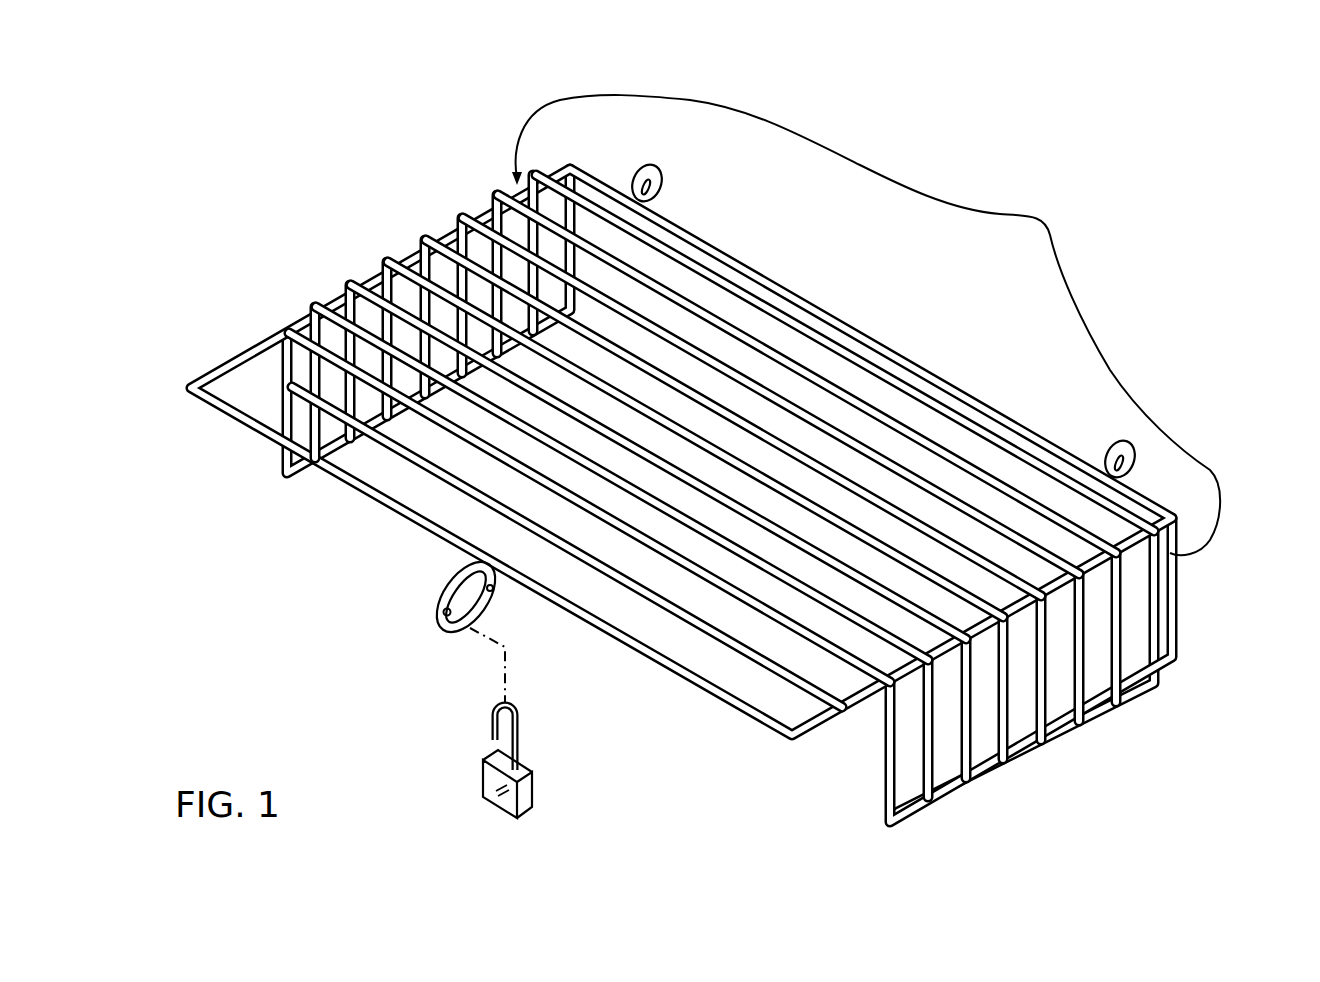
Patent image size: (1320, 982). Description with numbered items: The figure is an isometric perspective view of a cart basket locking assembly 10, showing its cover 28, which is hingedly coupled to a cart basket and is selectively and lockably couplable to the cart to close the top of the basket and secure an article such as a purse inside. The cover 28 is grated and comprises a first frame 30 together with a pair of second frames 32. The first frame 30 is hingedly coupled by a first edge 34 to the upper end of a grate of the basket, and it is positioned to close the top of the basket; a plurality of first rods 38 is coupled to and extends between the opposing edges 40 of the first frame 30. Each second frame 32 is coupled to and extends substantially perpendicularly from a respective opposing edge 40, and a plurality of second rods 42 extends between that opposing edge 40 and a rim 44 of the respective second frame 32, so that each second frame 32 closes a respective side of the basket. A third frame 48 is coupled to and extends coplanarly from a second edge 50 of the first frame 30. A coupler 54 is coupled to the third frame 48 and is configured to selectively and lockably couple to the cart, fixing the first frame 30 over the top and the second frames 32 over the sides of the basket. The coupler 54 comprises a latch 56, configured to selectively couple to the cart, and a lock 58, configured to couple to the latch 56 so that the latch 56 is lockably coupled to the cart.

The locking assembly 10 is at (1135, 134).
The cover 28 is at (787, 279).
The first frame 30 is at (319, 346).
The second frames 32 is at (343, 449).
The first edge 34 is at (983, 387).
The first rods 38 is at (840, 551).
The opposing edges 40 is at (1049, 210).
The second rods 42 is at (1062, 677).
The rim 44 is at (1058, 727).
The third frame 48 is at (397, 522).
The second edge 50 is at (690, 583).
The coupler 54 is at (460, 642).
The latch 56 is at (446, 632).
The lock 58 is at (534, 814).